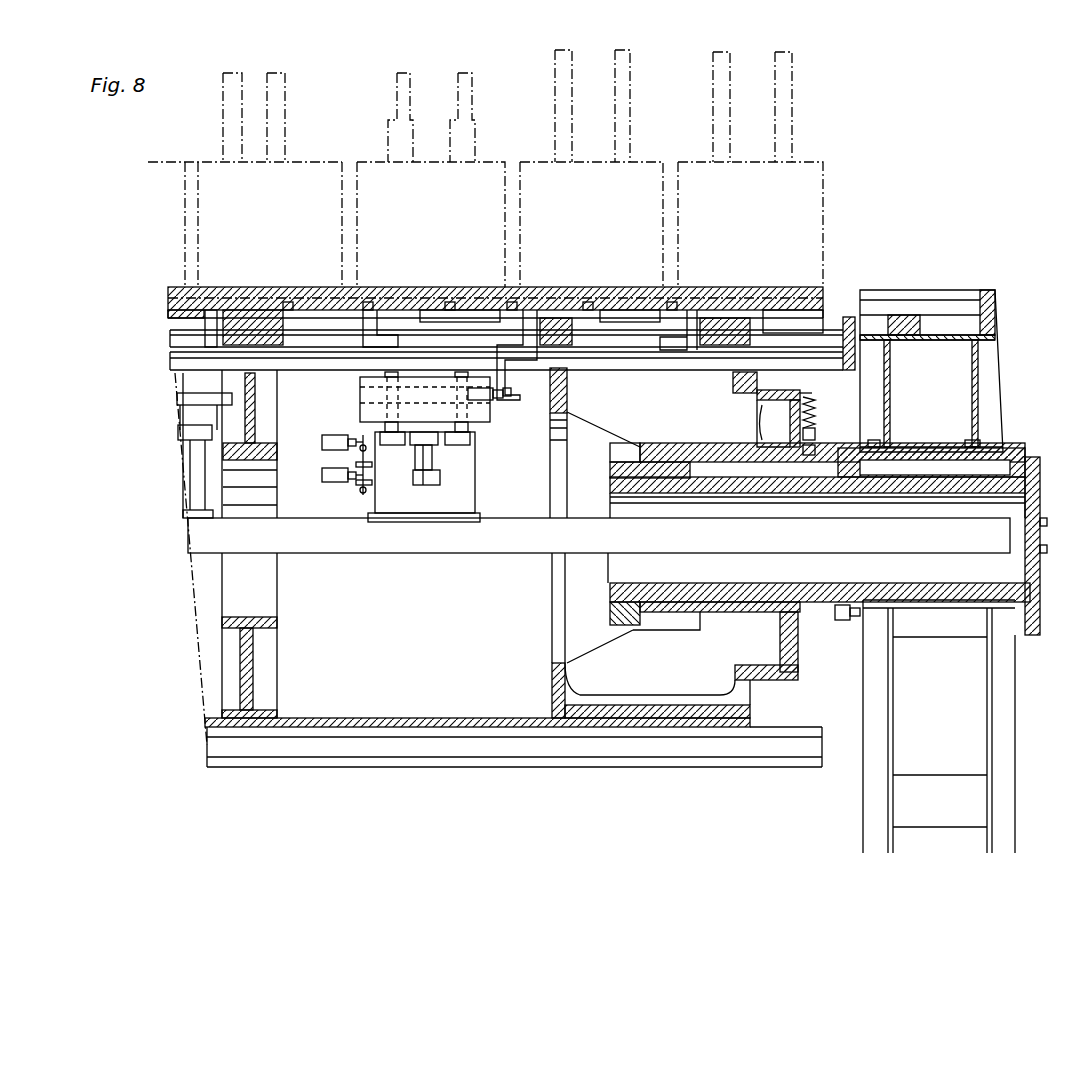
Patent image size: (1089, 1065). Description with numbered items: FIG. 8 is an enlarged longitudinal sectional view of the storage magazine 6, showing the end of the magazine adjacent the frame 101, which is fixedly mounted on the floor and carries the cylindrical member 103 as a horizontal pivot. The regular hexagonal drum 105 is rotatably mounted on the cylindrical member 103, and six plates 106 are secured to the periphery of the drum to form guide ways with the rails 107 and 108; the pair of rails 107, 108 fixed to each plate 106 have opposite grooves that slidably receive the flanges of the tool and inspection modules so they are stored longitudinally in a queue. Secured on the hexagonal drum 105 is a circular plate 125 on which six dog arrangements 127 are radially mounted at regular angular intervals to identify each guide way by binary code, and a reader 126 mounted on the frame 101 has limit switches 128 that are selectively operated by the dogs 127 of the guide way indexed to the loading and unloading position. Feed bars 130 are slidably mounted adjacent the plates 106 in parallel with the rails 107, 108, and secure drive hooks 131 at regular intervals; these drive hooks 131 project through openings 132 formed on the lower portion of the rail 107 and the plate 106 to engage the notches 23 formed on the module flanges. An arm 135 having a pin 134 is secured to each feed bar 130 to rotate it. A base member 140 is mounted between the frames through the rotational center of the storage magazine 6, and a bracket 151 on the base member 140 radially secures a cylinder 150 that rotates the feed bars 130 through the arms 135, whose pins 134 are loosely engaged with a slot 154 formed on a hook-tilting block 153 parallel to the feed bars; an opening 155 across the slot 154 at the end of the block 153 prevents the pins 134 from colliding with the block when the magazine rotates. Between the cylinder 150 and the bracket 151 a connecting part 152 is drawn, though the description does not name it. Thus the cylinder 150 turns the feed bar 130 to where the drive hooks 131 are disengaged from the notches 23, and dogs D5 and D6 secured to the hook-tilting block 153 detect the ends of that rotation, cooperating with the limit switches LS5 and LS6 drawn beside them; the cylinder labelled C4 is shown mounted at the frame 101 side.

The storage magazine 6 is at (621, 780).
The notches 23 is at (388, 302).
The frame 101 is at (1010, 700).
The cylindrical member 103 is at (1000, 475).
The hexagonal drum 105 is at (703, 443).
The plates 106 is at (720, 330).
The rail 107 is at (780, 290).
The rail 108 is at (415, 767).
The circular plate 125 is at (808, 393).
The reader 126 is at (815, 393).
The dog arrangements 127 is at (816, 436).
The limit switches 128 is at (816, 412).
The feed bars 130 is at (622, 372).
The drive hooks 131 is at (213, 350).
The openings 132 is at (318, 310).
The pin 134 is at (500, 403).
The arm 135 is at (507, 388).
The base member 140 is at (497, 553).
The cylinder 150 is at (440, 468).
The bracket 151 is at (475, 500).
The bracket 152 is at (440, 440).
The hook-tilting block 153 is at (360, 418).
The slot 154 is at (360, 390).
The opening 155 is at (480, 400).
The cylinder C4 is at (900, 289).
The dog D5 is at (372, 478).
The dog D6 is at (373, 464).
The limit switch LS5 is at (322, 476).
The limit switch LS6 is at (322, 443).